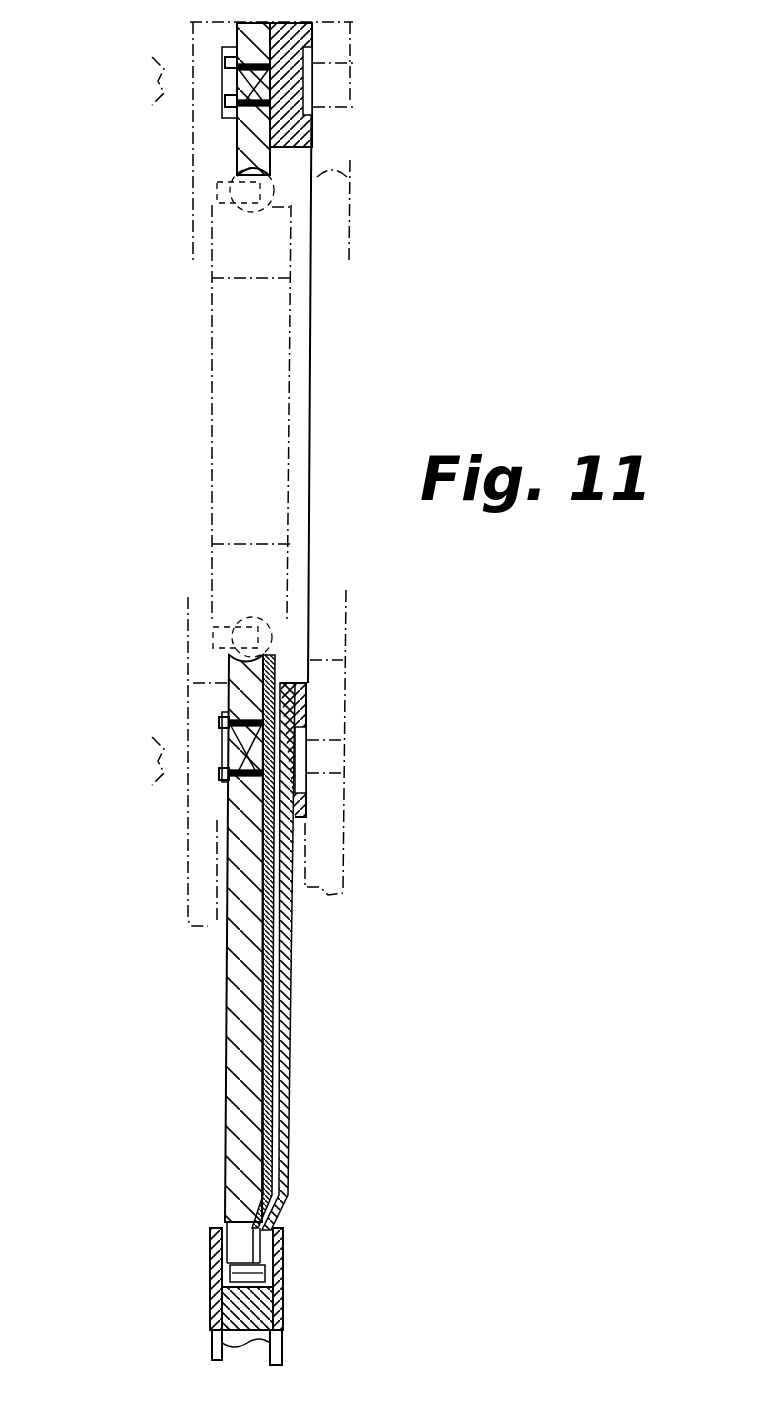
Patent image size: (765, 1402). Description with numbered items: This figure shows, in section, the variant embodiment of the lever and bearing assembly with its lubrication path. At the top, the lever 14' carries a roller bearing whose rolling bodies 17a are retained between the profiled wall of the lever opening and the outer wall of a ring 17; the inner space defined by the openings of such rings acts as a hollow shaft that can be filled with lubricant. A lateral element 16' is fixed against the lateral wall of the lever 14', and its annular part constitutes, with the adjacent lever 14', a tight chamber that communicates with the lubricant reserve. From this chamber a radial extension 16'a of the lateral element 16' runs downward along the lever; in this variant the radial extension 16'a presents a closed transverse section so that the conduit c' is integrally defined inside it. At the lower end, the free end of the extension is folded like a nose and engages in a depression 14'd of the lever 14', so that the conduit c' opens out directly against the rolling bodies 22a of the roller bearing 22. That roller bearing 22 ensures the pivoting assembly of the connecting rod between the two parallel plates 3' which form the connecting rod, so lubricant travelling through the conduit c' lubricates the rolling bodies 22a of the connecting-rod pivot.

The lever 14' is at (163, 622).
The depression of the lever 14'd is at (159, 1221).
The lateral element 16' is at (388, 420).
The radial extension 16'a is at (362, 956).
The ring 17 is at (224, 262).
The rolling bodies 17a is at (248, 616).
The conduit c' is at (337, 941).
The parallel plates 3' is at (258, 1269).
The roller bearing 22 is at (210, 1333).
The rolling bodies of the roller bearing 22a is at (285, 1280).